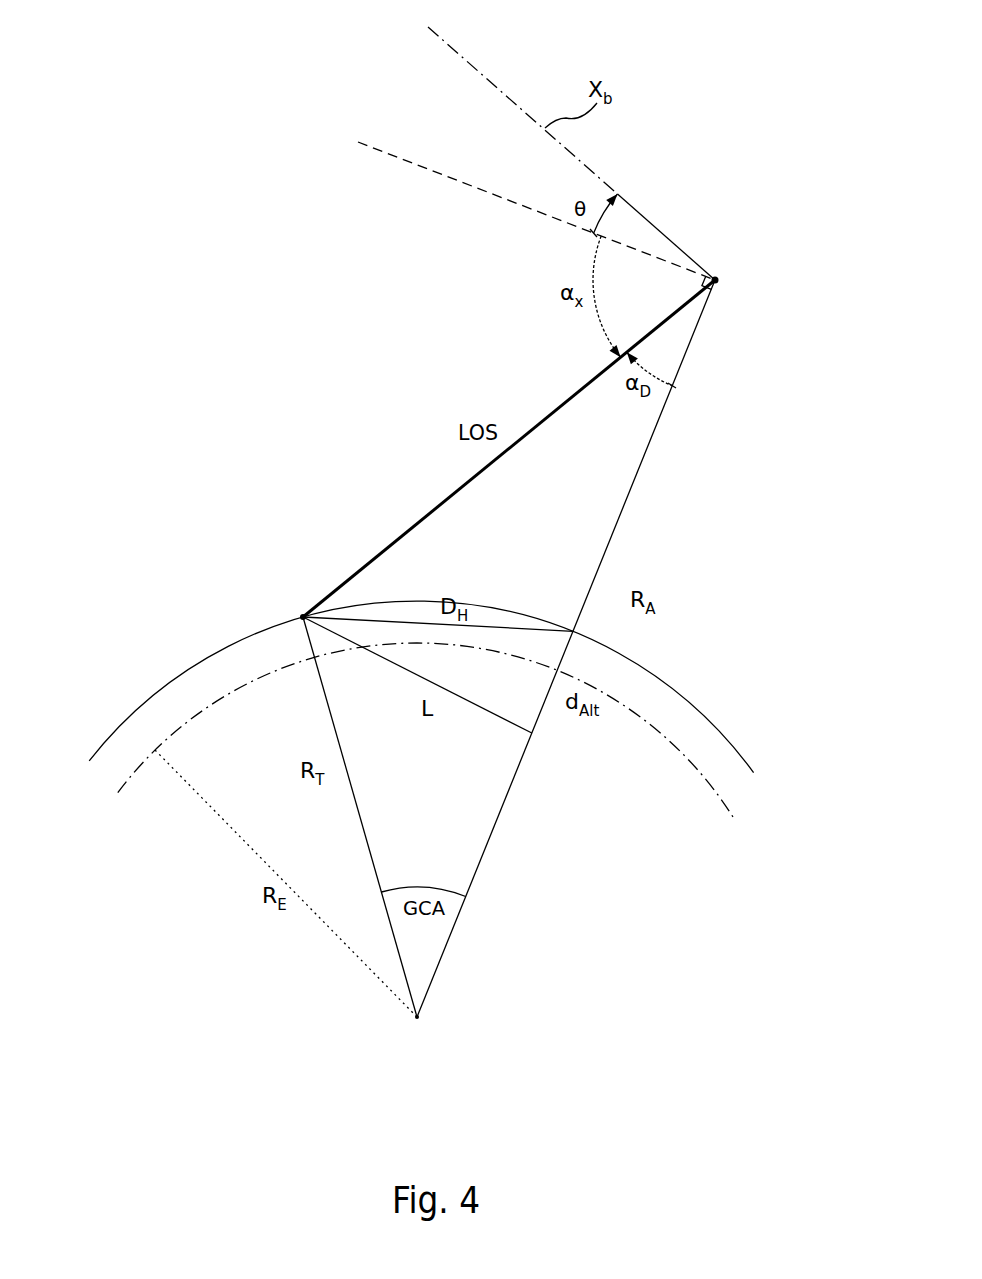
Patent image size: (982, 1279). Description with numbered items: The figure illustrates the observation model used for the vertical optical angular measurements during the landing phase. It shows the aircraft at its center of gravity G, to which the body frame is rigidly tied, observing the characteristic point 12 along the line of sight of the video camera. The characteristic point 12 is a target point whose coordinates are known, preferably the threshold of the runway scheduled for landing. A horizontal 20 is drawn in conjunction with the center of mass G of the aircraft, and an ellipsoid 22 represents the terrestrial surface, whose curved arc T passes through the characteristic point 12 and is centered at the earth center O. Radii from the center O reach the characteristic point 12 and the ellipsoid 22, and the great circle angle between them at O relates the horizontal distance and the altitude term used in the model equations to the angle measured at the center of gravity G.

The characteristic point 12 is at (303, 615).
The horizontal 20 is at (425, 168).
The ellipsoid 22 is at (720, 795).
The center of gravity G is at (720, 283).
The earth surface arc T is at (100, 664).
The earth center O is at (418, 1020).